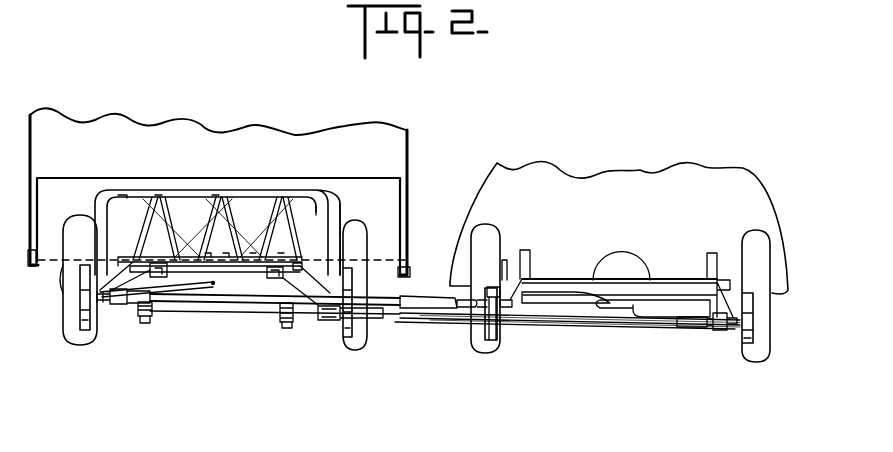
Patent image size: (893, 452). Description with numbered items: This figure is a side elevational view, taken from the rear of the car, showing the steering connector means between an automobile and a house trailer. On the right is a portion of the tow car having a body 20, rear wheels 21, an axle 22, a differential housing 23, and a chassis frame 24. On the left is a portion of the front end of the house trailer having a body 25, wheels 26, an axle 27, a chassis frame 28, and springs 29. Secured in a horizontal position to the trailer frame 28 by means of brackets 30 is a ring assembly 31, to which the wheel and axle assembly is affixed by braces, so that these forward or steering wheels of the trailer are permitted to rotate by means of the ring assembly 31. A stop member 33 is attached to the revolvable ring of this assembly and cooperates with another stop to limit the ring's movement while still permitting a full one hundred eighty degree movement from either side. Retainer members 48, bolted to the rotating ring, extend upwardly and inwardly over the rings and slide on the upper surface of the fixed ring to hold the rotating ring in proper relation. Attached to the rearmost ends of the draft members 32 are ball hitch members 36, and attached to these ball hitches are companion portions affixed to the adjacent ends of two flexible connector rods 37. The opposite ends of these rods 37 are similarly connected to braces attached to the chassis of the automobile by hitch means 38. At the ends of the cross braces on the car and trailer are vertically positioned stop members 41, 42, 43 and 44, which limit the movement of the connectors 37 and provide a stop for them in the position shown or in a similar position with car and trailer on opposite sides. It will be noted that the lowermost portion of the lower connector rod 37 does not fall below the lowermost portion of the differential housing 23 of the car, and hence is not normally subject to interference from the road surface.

The body 20 is at (568, 190).
The rear wheels 21 is at (485, 237).
The axle 22 is at (570, 296).
The differential housing 23 is at (623, 303).
The chassis frame 24 is at (708, 263).
The body 25 is at (97, 133).
The wheels 26 is at (72, 333).
The axle 27 is at (228, 312).
The chassis frame 28 is at (95, 205).
The springs 29 is at (145, 323).
The brackets 30 is at (205, 197).
The ring assembly 31 is at (240, 275).
The draft members 32 is at (123, 283).
The stop member 33 is at (213, 284).
The ball hitch members 36 is at (110, 302).
The flexible connector rods 37 is at (425, 300).
The hitch means 38 is at (507, 327).
The stop member 41 is at (85, 328).
The stop member 42 is at (347, 330).
The stop member 43 is at (490, 335).
The stop member 44 is at (748, 340).
The retainer members 48 is at (157, 277).